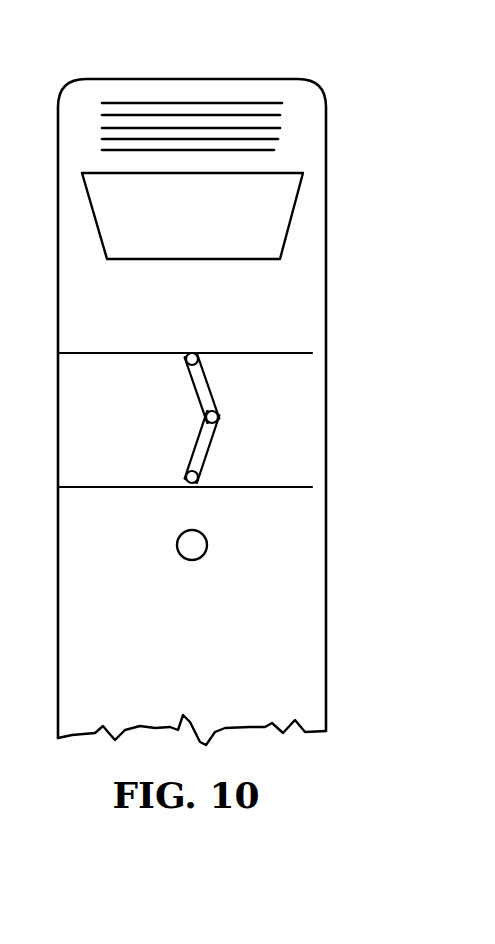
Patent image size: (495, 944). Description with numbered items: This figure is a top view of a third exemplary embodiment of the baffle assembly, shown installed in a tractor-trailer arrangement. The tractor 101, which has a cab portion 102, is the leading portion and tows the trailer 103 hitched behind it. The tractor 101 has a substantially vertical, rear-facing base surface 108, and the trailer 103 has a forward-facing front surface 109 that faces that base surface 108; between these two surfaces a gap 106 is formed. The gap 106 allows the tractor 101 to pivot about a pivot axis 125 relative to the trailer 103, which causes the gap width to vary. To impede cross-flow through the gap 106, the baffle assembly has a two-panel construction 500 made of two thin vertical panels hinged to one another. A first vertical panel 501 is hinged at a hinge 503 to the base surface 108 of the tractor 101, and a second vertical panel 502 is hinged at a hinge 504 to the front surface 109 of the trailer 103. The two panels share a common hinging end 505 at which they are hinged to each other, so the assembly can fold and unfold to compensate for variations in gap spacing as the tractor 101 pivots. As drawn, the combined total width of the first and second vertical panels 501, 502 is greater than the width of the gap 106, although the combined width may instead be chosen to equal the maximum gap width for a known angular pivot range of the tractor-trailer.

The tractor 101 is at (257, 79).
The cab portion 102 is at (170, 296).
The trailer 103 is at (155, 677).
The gap 106 is at (78, 431).
The base surface 108 is at (312, 353).
The front surface 109 is at (312, 487).
The pivot axis 125 is at (208, 549).
The two-panel construction 500 is at (284, 427).
The first vertical panel 501 is at (210, 377).
The second vertical panel 502 is at (212, 447).
The hinge 503 is at (186, 362).
The hinge 504 is at (183, 474).
The common hinging end 505 is at (220, 415).